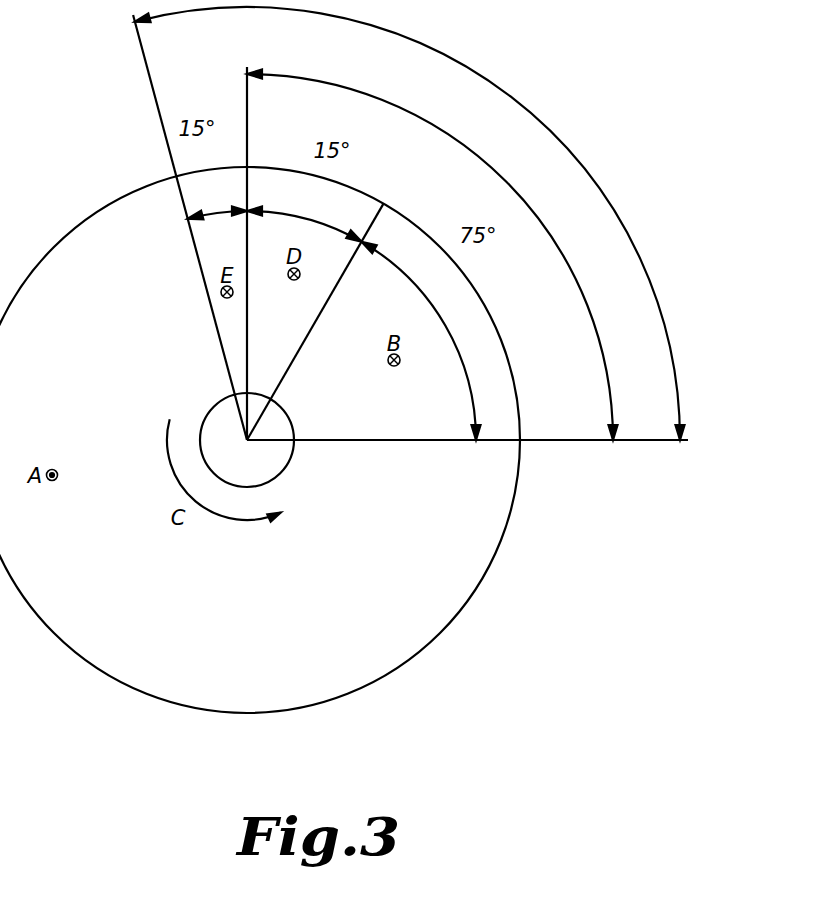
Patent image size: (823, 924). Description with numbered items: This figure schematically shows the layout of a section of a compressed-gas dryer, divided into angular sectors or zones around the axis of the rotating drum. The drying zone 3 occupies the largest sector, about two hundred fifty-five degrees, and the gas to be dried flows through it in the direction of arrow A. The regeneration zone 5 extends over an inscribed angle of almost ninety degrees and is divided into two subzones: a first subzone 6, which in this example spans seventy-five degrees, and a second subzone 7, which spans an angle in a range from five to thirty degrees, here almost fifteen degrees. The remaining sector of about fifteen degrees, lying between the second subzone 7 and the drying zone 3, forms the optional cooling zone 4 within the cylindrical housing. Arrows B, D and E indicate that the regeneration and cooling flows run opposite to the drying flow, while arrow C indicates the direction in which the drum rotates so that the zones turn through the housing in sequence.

The drying zone 3 is at (303, 596).
The cooling zone 4 is at (203, 205).
The regeneration zone 5 is at (502, 170).
The first subzone 6 is at (339, 406).
The second subzone 7 is at (262, 333).